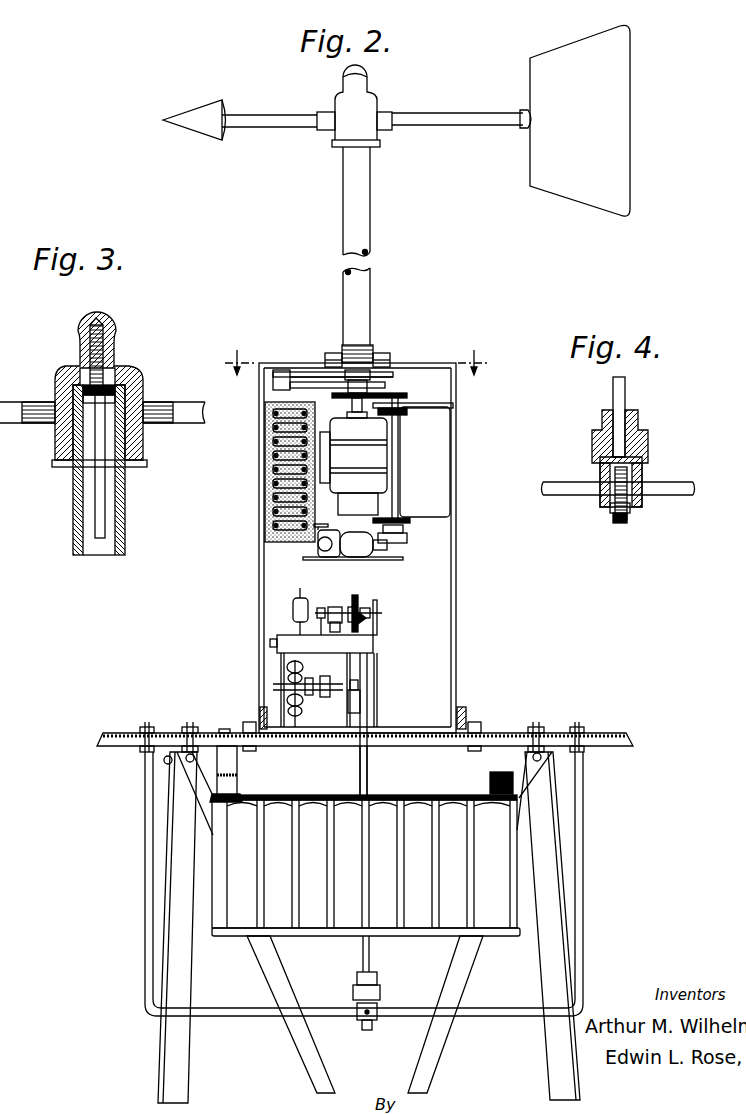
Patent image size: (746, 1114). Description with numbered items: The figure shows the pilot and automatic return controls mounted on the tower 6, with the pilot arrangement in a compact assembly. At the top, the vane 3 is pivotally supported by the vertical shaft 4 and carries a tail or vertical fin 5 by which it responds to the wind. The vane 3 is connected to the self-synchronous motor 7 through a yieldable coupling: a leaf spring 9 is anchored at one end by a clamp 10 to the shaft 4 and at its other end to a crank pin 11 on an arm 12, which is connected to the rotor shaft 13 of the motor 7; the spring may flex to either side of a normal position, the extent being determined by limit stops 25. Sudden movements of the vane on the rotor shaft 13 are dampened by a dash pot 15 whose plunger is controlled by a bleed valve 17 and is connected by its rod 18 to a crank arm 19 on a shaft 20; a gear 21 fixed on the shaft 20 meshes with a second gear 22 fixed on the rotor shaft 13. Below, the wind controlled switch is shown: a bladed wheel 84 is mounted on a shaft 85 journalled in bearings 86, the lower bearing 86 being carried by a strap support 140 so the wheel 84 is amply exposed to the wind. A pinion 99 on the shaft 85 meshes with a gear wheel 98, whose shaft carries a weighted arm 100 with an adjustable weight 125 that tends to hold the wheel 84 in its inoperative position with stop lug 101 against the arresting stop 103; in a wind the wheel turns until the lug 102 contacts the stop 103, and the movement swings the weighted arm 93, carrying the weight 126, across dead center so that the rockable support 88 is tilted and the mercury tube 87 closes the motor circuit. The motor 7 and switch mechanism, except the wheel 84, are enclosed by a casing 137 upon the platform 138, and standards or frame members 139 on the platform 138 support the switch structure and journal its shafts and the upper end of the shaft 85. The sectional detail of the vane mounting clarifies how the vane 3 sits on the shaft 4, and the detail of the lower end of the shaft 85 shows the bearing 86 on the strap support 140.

In FIG. 2, the vane 3 is at (291, 111).
In FIG. 3, the vane 3 is at (60, 360).
In FIG. 2, the vertical shaft 4 is at (357, 266).
In FIG. 3, the vertical shaft 4 is at (101, 500).
In FIG. 2, the tail or vertical fin 5 is at (545, 80).
In FIG. 2, the tower 6 is at (548, 875).
In FIG. 2, the self-synchronous motor 7 is at (368, 455).
In FIG. 2, the leaf spring 9 is at (316, 383).
In FIG. 2, the clamp 10 is at (346, 378).
In FIG. 2, the crank pin 11 is at (282, 372).
In FIG. 2, the arm 12 is at (300, 382).
In FIG. 2, the rotor shaft 13 is at (350, 410).
In FIG. 2, the dash pot 15 is at (360, 547).
In FIG. 2, the bleed valve 17 is at (318, 543).
In FIG. 2, the plunger rod 18 is at (402, 558).
In FIG. 2, the crank arm 19 is at (407, 536).
In FIG. 2, the shaft 20 is at (398, 490).
In FIG. 2, the gear 21 is at (405, 407).
In FIG. 2, the second gear 22 is at (410, 395).
In FIG. 2, the limit stops 25 is at (366, 357).
In FIG. 2, the bladed wheel 84 is at (420, 812).
In FIG. 2, the wind-wheel shaft 85 is at (370, 767).
In FIG. 4, the wind-wheel shaft 85 is at (626, 390).
In FIG. 2, the bearings 86 is at (366, 620).
In FIG. 4, the bearings 86 is at (645, 476).
In FIG. 2, the mercury switch tube 87 is at (302, 714).
In FIG. 2, the rockable support 88 is at (301, 704).
In FIG. 2, the weighted arm 93 is at (304, 596).
In FIG. 2, the gear wheel 98 is at (358, 602).
In FIG. 2, the pinion 99 is at (370, 642).
In FIG. 2, the weighted arm 100 is at (358, 668).
In FIG. 2, the stop lug 101 is at (241, 794).
In FIG. 2, the stop lug 102 is at (497, 774).
In FIG. 2, the arresting stop 103 is at (238, 760).
In FIG. 2, the weight 125 is at (360, 708).
In FIG. 2, the weight 126 is at (305, 606).
In FIG. 2, the casing 137 is at (458, 588).
In FIG. 2, the platform 138 is at (500, 731).
In FIG. 2, the standards or frame members 139 is at (358, 693).
In FIG. 2, the strap support 140 is at (145, 901).
In FIG. 4, the strap support 140 is at (680, 496).